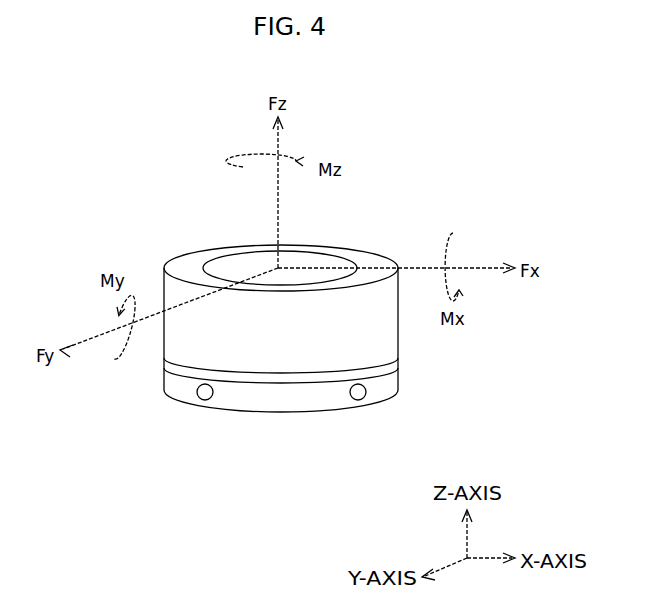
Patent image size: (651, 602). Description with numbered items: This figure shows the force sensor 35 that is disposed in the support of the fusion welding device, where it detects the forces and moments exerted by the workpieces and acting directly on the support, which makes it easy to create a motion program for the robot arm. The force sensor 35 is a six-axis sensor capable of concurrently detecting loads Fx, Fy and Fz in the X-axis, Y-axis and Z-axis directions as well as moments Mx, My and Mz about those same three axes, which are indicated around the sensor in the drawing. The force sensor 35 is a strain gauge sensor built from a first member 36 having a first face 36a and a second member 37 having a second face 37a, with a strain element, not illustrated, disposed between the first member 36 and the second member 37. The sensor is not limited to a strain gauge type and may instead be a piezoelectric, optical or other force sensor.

The force sensor 35 is at (319, 332).
The first member 36 is at (344, 249).
The first face 36a is at (376, 257).
The second member 37 is at (280, 409).
The second face 37a is at (338, 409).